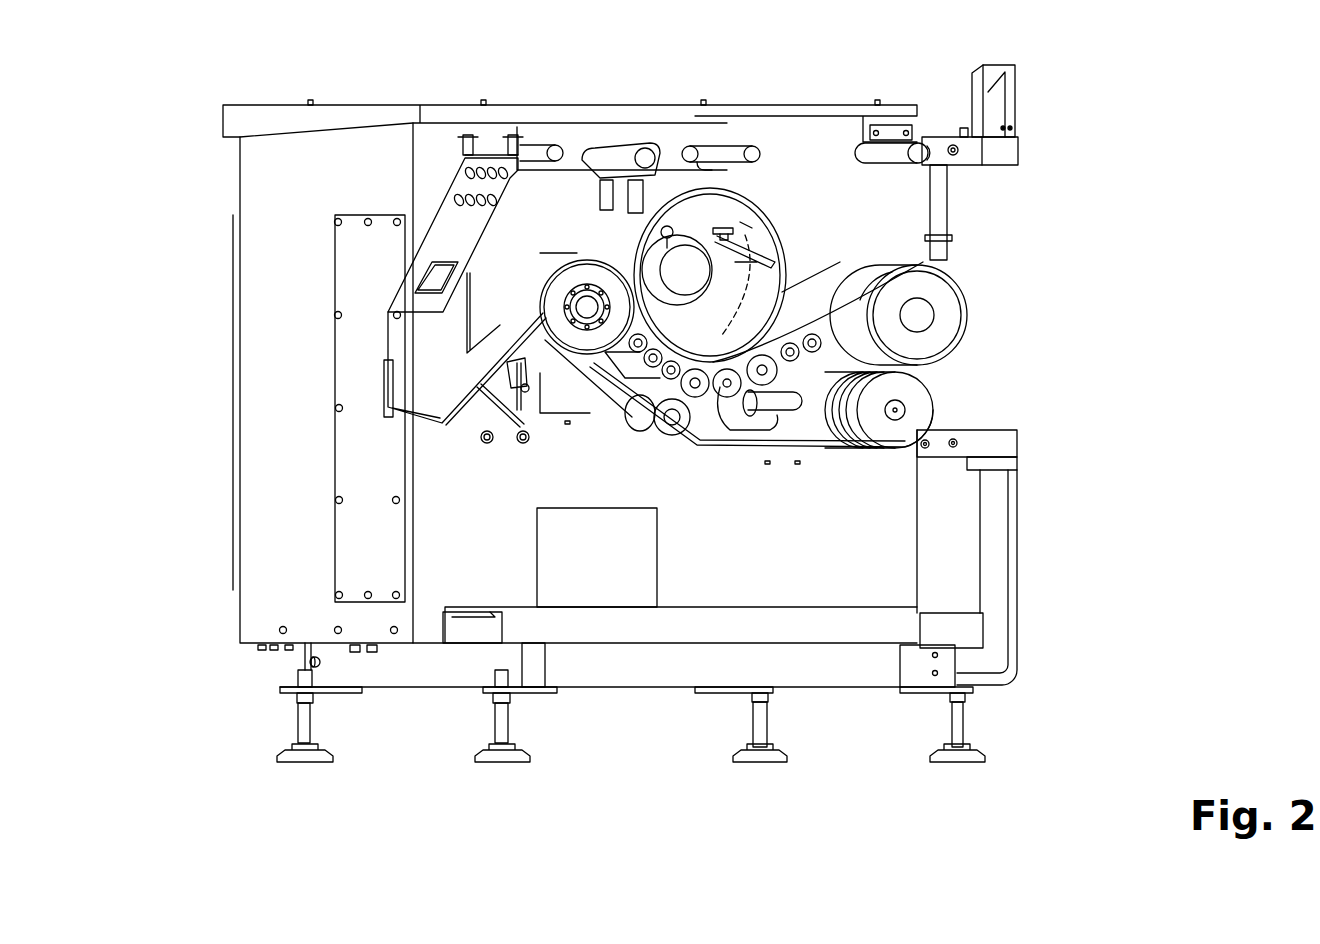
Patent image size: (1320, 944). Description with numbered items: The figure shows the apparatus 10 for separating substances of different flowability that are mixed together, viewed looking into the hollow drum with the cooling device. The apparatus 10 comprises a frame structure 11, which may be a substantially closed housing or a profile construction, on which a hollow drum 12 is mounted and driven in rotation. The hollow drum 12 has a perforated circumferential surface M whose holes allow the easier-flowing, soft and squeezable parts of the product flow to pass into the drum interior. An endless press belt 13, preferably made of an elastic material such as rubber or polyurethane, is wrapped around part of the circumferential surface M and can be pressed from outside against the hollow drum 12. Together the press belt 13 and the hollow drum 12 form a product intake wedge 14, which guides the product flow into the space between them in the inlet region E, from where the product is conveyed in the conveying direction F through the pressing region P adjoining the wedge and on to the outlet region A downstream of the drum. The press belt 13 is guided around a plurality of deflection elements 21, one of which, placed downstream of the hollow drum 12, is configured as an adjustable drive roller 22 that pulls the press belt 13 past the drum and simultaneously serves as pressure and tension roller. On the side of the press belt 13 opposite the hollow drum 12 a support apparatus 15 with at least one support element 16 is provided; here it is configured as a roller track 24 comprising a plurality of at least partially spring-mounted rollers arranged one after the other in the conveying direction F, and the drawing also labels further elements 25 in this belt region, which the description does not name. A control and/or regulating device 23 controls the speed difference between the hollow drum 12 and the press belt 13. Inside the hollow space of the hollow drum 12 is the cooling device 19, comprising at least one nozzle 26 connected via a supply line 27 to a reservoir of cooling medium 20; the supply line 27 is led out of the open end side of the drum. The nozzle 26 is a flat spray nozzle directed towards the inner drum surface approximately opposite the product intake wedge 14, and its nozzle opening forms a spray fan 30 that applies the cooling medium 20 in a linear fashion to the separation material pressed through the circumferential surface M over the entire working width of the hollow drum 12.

The apparatus 10 is at (1168, 98).
The frame structure 11 is at (258, 246).
The hollow drum 12 is at (767, 193).
The press belt 13 is at (830, 290).
The product intake wedge 14 is at (822, 253).
The support apparatus 15 is at (873, 413).
The support element 16 is at (761, 424).
The cooling device 19 is at (762, 220).
The cooling medium 20 is at (713, 230).
The deflection element 21 is at (778, 370).
The drive roller 22 is at (587, 358).
The control and/or regulating device 23 is at (1033, 112).
The roller track 24 is at (815, 375).
The deflection roller 25 is at (696, 398).
The nozzle 26 is at (737, 135).
The supply line 27 is at (735, 233).
The spray fan 30 is at (768, 265).
The circumferential surface M is at (607, 240).
The outlet region A is at (402, 403).
The inlet region E is at (910, 212).
The conveying direction F is at (882, 255).
The pressing region P is at (722, 381).